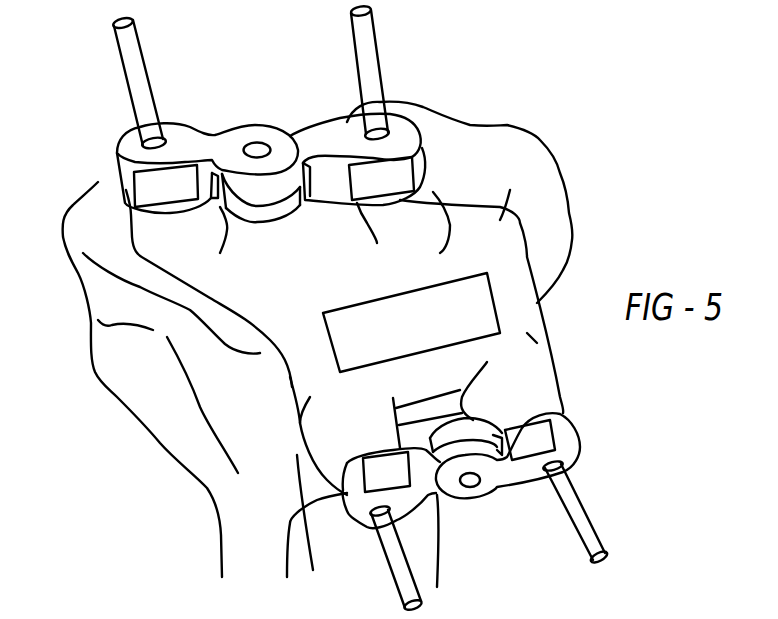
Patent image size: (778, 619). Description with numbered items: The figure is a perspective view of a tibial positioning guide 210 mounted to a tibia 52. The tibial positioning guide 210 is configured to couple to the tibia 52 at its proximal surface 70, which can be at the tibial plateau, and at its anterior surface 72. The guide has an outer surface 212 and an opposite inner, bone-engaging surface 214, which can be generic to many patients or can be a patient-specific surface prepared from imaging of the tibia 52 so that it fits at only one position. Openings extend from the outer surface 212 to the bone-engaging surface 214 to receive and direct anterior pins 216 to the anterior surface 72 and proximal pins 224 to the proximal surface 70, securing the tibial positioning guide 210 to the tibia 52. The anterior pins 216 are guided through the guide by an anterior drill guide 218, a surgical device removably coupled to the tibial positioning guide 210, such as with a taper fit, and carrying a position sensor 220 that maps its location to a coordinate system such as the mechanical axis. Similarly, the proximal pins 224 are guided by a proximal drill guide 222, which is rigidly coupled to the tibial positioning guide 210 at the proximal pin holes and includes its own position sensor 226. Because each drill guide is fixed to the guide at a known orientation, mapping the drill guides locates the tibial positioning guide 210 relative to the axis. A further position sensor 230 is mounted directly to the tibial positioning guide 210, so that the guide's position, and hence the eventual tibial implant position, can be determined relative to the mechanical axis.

The proximal surface 70 is at (112, 212).
The tibia 52 is at (147, 373).
The anterior surface 72 is at (175, 420).
The tibial positioning guide 210 is at (521, 280).
The outer surface 212 is at (500, 215).
The bone-engaging surface 214 is at (190, 310).
The anterior pins 216 is at (577, 540).
The anterior drill guide 218 is at (364, 494).
The position sensor 220 is at (347, 462).
The proximal drill guide 222 is at (401, 130).
The proximal pins 224 is at (353, 50).
The position sensor 226 is at (410, 170).
The position sensor 230 is at (473, 317).